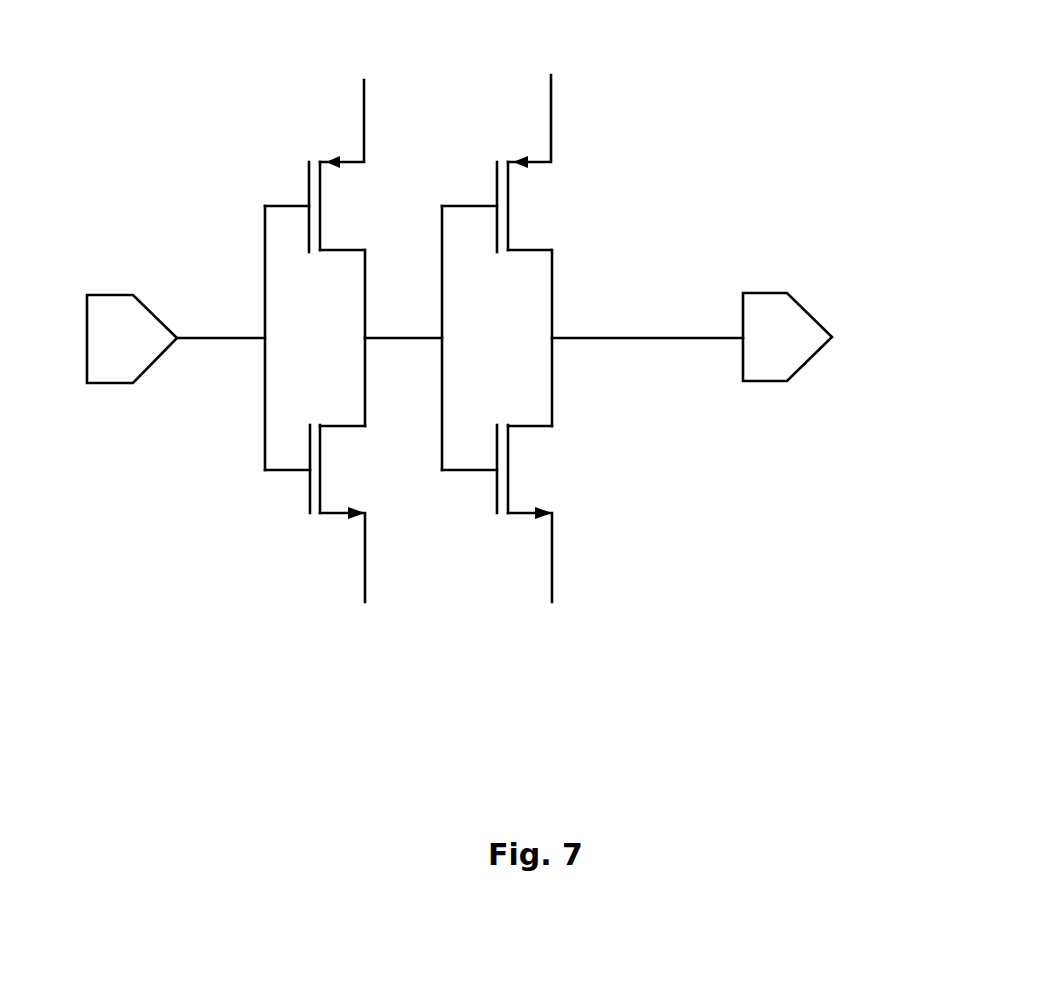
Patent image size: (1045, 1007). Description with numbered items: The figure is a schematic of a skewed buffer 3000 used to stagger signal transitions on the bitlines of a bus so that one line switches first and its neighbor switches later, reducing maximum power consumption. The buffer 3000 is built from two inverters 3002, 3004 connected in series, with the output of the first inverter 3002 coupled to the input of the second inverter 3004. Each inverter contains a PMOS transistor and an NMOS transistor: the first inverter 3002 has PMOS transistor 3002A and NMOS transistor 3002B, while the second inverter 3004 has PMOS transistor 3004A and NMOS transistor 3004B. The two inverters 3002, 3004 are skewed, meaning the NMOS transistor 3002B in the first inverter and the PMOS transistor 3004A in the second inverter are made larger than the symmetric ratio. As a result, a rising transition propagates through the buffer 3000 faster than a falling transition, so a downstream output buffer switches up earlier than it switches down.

The buffer 3000 is at (400, 703).
The inverter 3002 is at (343, 572).
The PMOS transistor 3002A is at (309, 206).
The NMOS transistor 3002B is at (310, 513).
The inverter 3004 is at (590, 528).
The PMOS transistor 3004A is at (528, 250).
The NMOS transistor 3004B is at (508, 500).